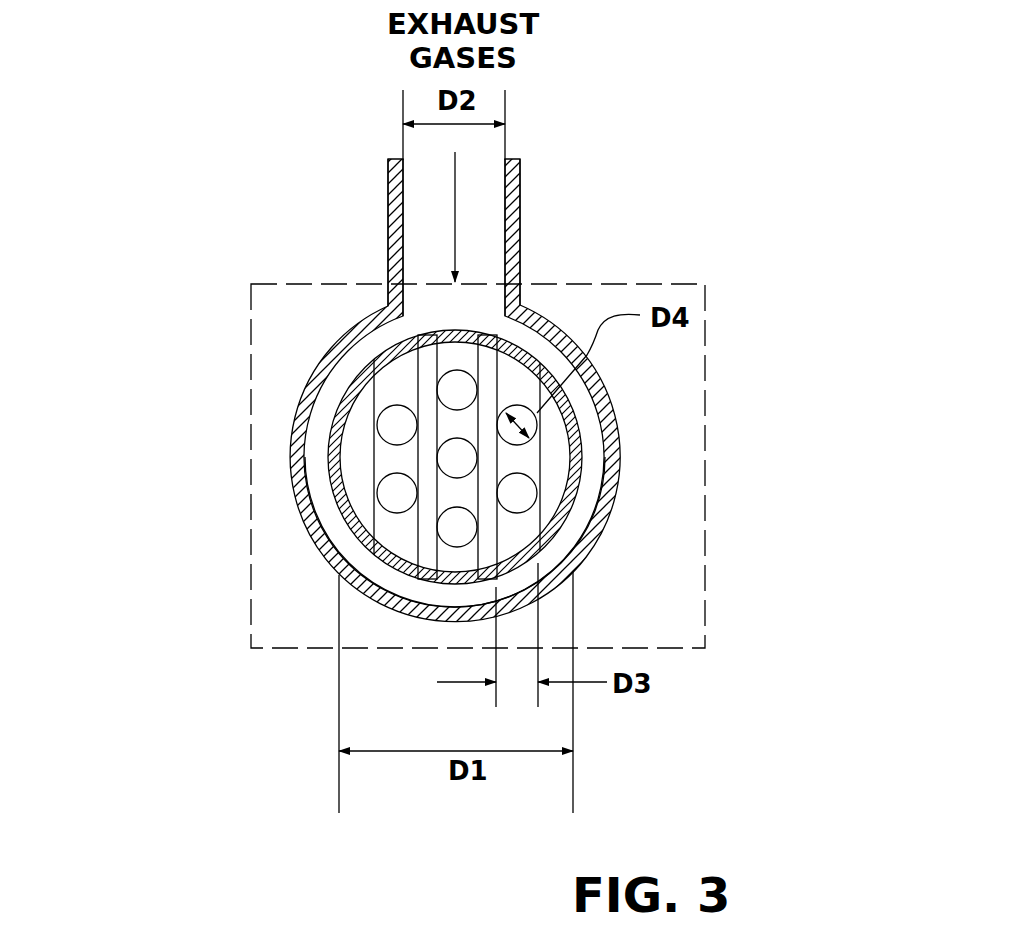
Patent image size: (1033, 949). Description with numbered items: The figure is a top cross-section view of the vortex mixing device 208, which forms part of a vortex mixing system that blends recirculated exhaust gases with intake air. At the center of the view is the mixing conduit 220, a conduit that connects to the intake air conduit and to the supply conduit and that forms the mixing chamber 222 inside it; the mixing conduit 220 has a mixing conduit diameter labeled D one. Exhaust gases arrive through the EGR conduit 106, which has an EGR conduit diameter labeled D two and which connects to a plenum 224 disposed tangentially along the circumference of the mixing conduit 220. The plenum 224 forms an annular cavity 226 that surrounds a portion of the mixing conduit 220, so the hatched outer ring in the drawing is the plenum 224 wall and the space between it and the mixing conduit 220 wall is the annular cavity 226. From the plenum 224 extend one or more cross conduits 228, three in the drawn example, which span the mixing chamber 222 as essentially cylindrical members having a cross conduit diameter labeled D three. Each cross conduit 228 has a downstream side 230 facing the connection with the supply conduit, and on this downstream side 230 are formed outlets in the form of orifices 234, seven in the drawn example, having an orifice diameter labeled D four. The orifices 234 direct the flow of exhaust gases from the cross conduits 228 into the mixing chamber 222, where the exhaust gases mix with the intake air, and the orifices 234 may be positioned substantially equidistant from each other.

The EGR conduit 106 is at (520, 208).
The vortex mixing device 208 is at (642, 283).
The mixing conduit 220 is at (598, 423).
The mixing chamber 222 is at (553, 462).
The plenum 224 is at (292, 488).
The annular cavity 226 is at (323, 418).
The cross conduits 228 is at (517, 363).
The downstream side 230 is at (518, 545).
The orifices 234 is at (453, 527).